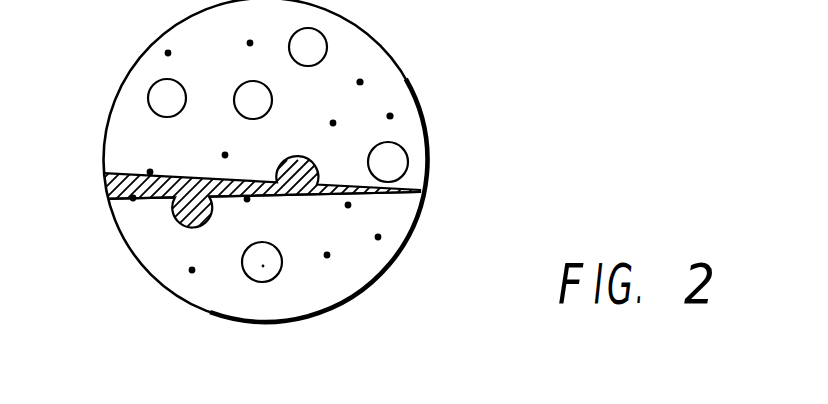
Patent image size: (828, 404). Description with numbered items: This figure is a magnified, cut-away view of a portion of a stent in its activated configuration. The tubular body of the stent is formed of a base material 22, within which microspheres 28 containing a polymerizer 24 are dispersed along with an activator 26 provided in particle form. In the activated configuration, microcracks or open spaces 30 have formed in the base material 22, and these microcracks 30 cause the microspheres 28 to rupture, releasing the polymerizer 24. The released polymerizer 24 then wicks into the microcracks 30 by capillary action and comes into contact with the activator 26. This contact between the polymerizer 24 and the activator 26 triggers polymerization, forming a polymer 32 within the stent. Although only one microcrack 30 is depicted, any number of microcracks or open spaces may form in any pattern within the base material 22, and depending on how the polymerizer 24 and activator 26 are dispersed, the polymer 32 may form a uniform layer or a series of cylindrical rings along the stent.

The base material 22 is at (165, 272).
The polymerizer 24 is at (263, 267).
The activator 26 is at (360, 82).
The microspheres 28 is at (250, 280).
The microcracks or open spaces 30 is at (118, 168).
The polymer 32 is at (133, 200).